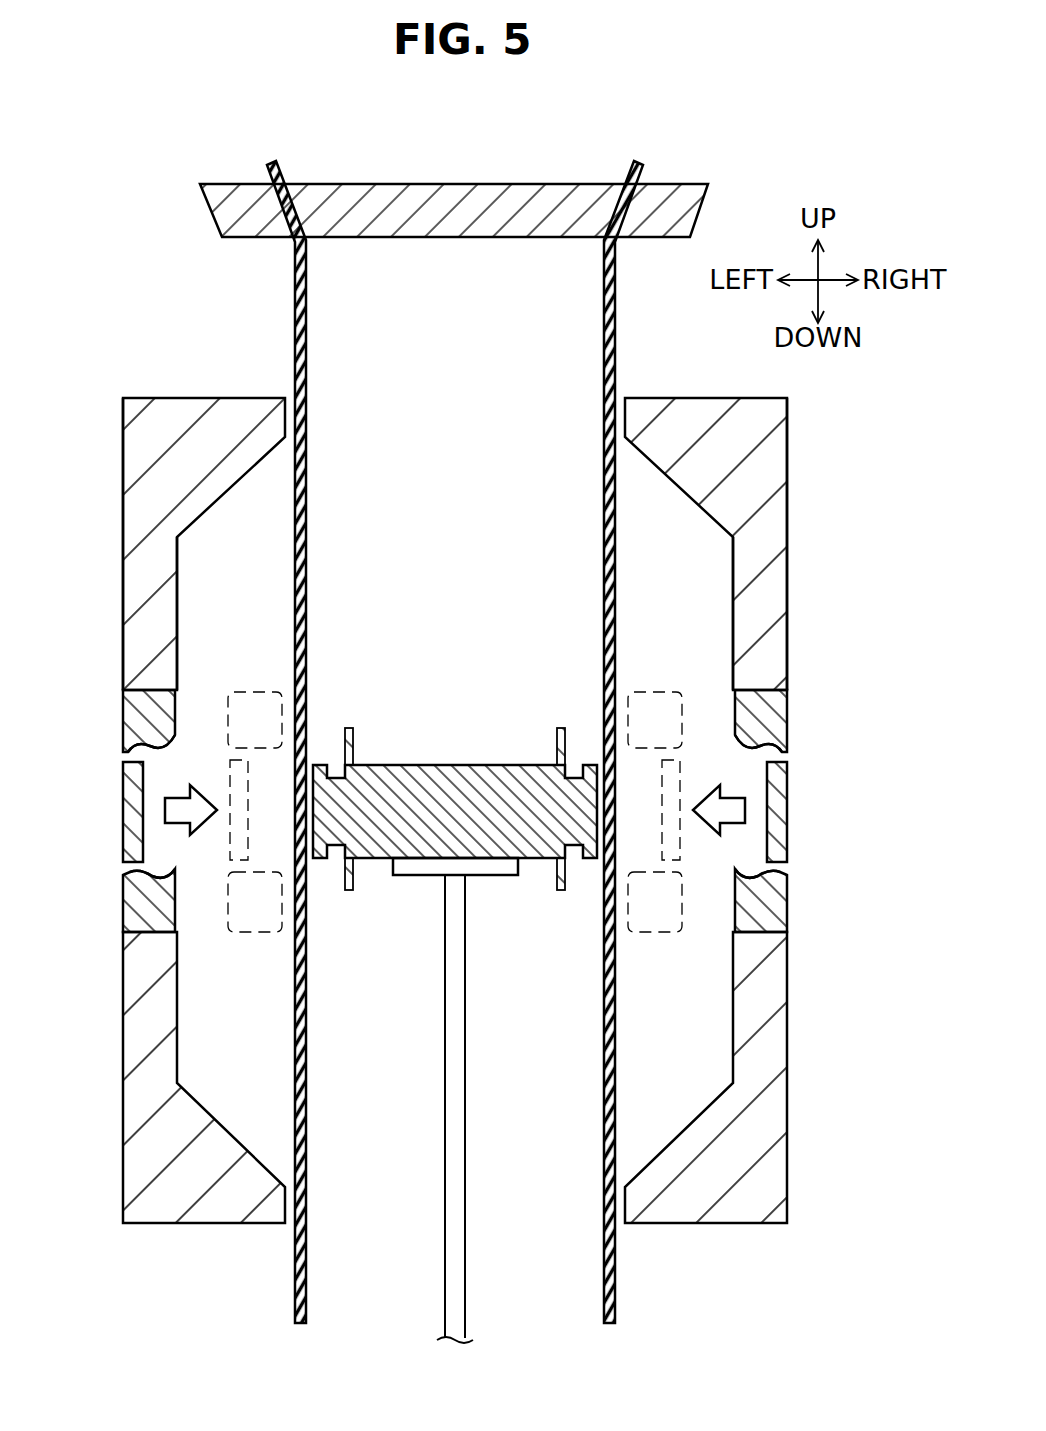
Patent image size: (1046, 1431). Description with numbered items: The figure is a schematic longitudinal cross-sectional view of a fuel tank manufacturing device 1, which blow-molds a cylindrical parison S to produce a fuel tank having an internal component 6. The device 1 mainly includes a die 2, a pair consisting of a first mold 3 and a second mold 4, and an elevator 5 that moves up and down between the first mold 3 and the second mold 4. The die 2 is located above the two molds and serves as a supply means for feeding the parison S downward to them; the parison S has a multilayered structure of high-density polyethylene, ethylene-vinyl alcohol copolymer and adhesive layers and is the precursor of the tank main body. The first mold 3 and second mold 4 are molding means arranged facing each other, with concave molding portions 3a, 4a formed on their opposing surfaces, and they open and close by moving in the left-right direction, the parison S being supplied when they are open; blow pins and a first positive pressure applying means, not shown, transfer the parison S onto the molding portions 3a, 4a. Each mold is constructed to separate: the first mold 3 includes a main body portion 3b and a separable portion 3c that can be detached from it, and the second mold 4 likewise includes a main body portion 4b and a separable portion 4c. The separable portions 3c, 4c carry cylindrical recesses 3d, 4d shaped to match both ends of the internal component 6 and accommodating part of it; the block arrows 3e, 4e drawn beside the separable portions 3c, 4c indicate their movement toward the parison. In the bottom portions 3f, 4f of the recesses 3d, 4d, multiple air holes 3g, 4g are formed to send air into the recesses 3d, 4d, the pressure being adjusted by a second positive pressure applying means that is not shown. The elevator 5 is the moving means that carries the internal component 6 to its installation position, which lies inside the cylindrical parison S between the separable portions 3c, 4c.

The fuel tank manufacturing device 1 is at (748, 146).
The die 2 is at (461, 184).
The first mold 3 is at (181, 398).
The molding portion 3a is at (181, 596).
The main body portion 3b is at (122, 597).
The separable portion 3c is at (122, 727).
The recess 3d is at (162, 778).
The left movement direction arrow 3e is at (176, 882).
The bottom portion 3f is at (124, 818).
The air holes 3g is at (124, 752).
The second mold 4 is at (729, 398).
The molding portion 4a is at (729, 596).
The main body portion 4b is at (788, 597).
The separable portion 4c is at (788, 727).
The recess 4d is at (748, 778).
The right movement direction arrow 4e is at (734, 882).
The bottom portion 4f is at (786, 818).
The air holes 4g is at (786, 752).
The elevator 5 is at (466, 1108).
The internal component 6 is at (461, 765).
The parison S is at (616, 318).